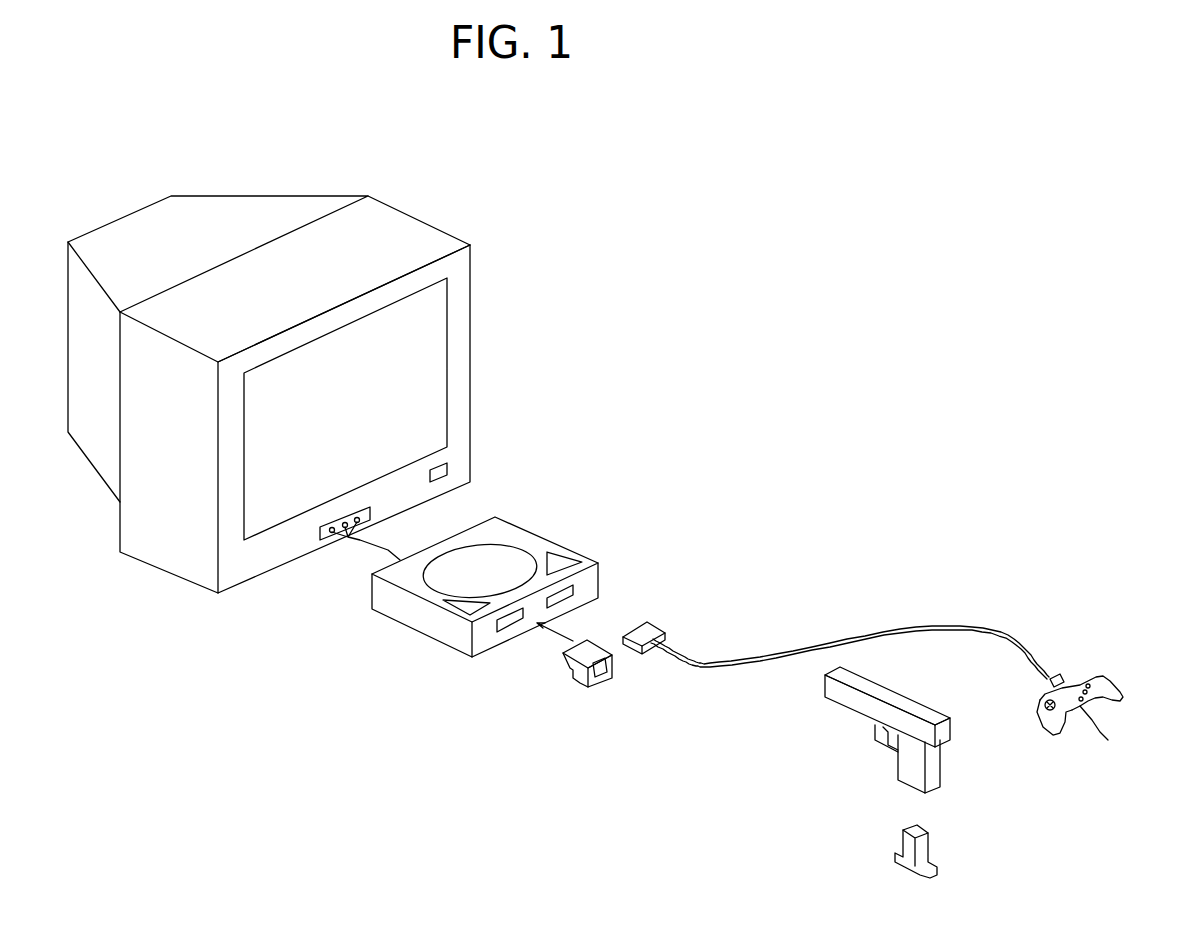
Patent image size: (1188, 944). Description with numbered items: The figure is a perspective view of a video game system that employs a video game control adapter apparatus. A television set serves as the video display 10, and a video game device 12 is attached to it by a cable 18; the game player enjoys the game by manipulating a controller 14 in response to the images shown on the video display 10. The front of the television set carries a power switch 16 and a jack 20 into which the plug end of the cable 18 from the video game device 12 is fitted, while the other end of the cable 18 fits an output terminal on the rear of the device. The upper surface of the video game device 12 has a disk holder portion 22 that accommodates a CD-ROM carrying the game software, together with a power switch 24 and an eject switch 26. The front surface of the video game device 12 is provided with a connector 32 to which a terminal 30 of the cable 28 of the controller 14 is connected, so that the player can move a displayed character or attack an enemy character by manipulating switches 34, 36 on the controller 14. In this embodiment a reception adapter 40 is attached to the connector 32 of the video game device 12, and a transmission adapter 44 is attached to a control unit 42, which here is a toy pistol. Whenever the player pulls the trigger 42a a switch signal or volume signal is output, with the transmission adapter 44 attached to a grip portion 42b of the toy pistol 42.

The video display 10 is at (470, 313).
The video game device 12 is at (535, 532).
The controller 14 is at (1085, 708).
The power switch 16 is at (447, 467).
The cable 18 is at (387, 540).
The jack 20 is at (320, 525).
The disk holder portion 22 is at (467, 557).
The power switch 24 is at (560, 562).
The eject switch 26 is at (470, 610).
The cable 28 is at (952, 627).
The terminal 30 is at (658, 623).
The connector 32 is at (568, 588).
The switch 34 is at (1040, 711).
The switch 36 is at (1087, 688).
The reception adapter 40 is at (573, 683).
The control unit 42 is at (833, 683).
The trigger 42a is at (882, 740).
The grip portion 42b is at (937, 772).
The transmission adapter 44 is at (925, 852).